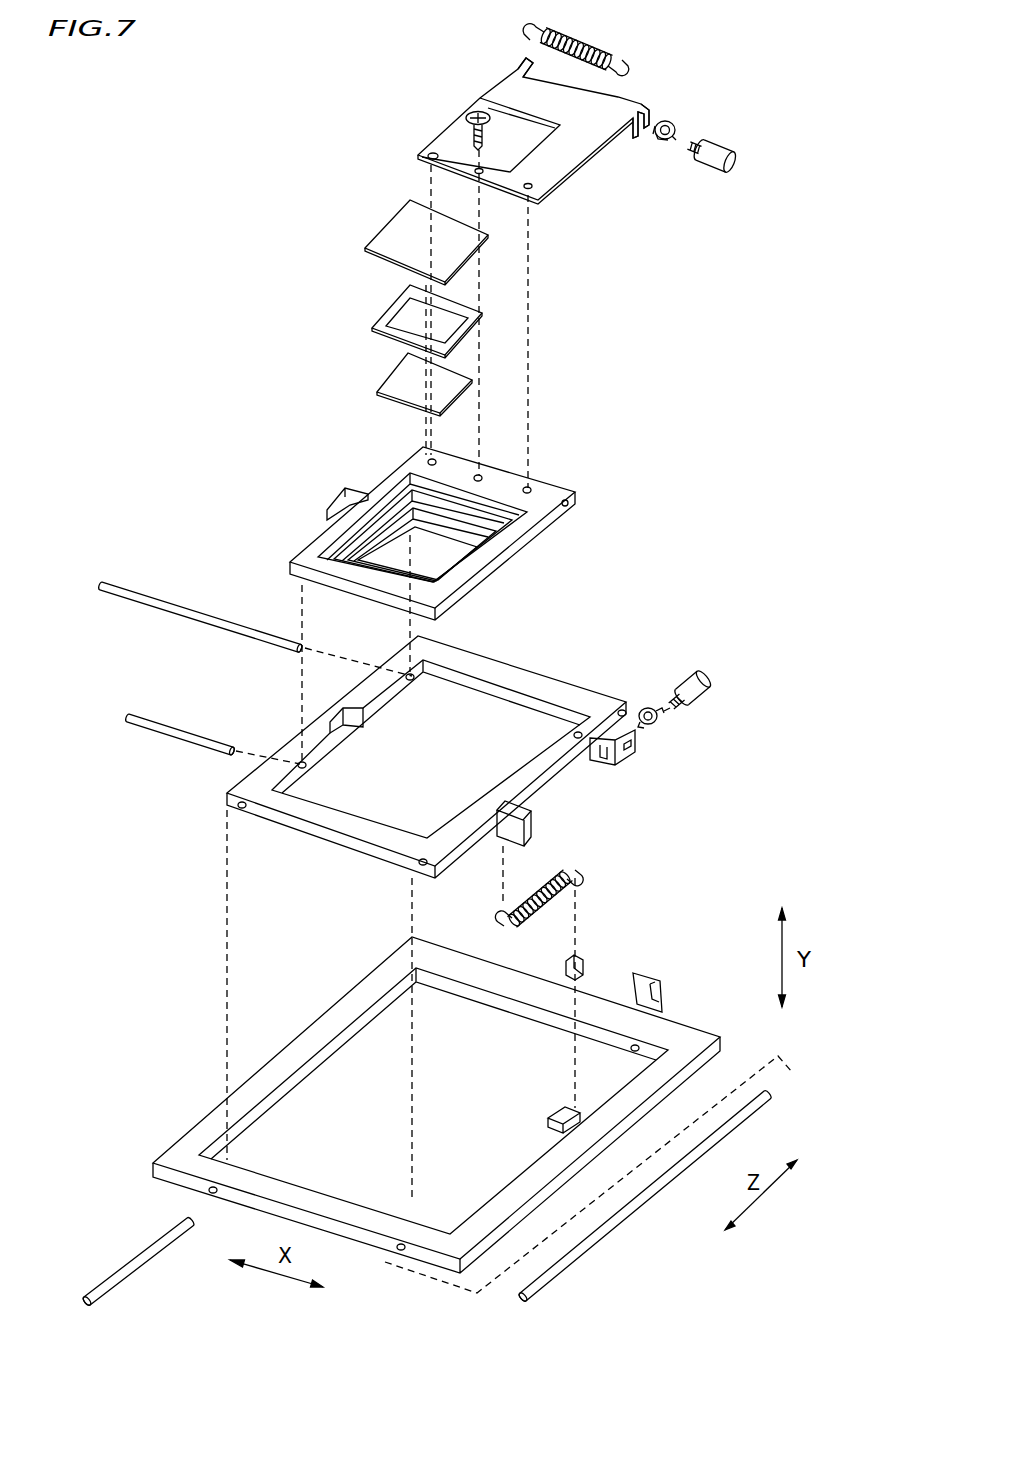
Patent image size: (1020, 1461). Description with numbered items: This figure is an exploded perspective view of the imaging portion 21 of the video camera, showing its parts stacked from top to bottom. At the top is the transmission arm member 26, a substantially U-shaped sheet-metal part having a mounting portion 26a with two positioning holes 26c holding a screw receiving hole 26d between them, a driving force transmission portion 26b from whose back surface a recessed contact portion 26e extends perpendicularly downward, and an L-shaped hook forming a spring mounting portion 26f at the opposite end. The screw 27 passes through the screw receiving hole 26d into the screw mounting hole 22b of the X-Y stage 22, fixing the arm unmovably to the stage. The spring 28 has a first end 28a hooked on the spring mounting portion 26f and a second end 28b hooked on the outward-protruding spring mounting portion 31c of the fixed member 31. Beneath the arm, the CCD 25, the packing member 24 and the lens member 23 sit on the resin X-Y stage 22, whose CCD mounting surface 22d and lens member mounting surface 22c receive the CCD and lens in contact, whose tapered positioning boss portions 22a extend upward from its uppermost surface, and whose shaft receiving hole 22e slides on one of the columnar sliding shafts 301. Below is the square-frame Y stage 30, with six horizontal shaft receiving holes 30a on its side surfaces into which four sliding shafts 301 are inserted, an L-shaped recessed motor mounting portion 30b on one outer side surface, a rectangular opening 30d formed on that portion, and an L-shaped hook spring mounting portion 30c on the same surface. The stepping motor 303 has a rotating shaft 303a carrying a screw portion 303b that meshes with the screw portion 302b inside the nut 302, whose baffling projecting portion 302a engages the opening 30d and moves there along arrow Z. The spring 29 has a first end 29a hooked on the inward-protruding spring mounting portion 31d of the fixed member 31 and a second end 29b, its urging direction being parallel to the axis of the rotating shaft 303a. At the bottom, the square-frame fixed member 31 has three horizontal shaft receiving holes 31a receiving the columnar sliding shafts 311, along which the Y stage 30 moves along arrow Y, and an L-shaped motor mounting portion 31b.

The imaging portion 21 is at (218, 115).
The X-Y stage 22 is at (305, 546).
The positioning boss portions 22a is at (434, 461).
The screw mounting hole 22b is at (480, 478).
The lens member mounting surface 22c is at (373, 548).
The CCD mounting surface 22d is at (378, 535).
The shaft receiving hole 22e is at (567, 503).
The lens member 23 is at (388, 372).
The packing member 24 is at (390, 308).
The CCD 25 is at (387, 222).
The transmission arm member 26 is at (578, 160).
The mounting portion 26a is at (430, 156).
The driving force transmission portion 26b is at (610, 97).
The positioning holes 26c is at (535, 187).
The screw receiving hole 26d is at (477, 169).
The contact portion 26e is at (648, 115).
The spring mounting portion 26f is at (516, 67).
The screw 27 is at (473, 112).
The spring 28 is at (596, 48).
The first end 28a is at (524, 38).
The second end 28b is at (629, 70).
The spring 29 is at (553, 893).
The first end 29a is at (502, 930).
The second end 29b is at (581, 869).
The Y stage 30 is at (345, 848).
The shaft receiving holes 30a is at (408, 675).
The motor mounting portion 30b is at (606, 762).
The spring mounting portion 30c is at (526, 824).
The rectangular opening 30d is at (630, 752).
The sliding shafts 301 is at (253, 630).
The nut 302 is at (650, 726).
The projecting portion 302a is at (653, 722).
The screw portion 302b is at (645, 728).
The stepping motor 303 is at (703, 689).
The rotating shaft 303a is at (662, 712).
The screw portion 303b is at (680, 703).
The fixed member 31 is at (323, 1013).
The shaft receiving holes 31a is at (645, 1050).
The motor mounting portion 31b is at (664, 994).
The spring mounting portion 31c is at (582, 966).
The spring mounting portion 31d is at (566, 1118).
The sliding shafts 311 is at (160, 1233).